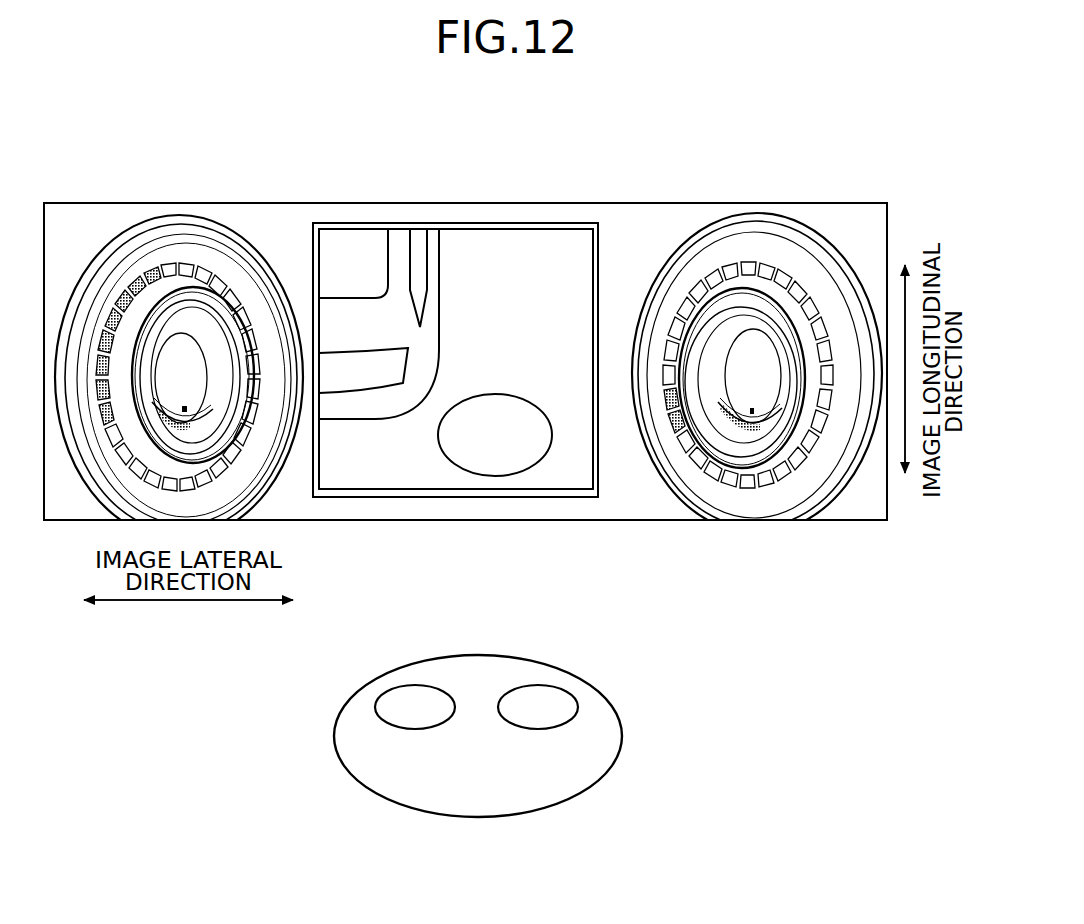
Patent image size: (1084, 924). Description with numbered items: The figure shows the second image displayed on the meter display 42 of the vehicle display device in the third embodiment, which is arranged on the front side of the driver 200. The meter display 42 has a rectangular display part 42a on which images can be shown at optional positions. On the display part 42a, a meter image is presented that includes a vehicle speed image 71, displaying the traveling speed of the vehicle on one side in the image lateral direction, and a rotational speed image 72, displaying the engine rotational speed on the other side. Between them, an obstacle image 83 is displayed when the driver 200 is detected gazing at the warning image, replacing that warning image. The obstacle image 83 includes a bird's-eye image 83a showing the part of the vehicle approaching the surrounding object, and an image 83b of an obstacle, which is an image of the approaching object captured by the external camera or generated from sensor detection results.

The meter display 42 is at (563, 203).
The display part 42a is at (285, 226).
The vehicle speed image 71 is at (240, 228).
The rotational speed image 72 is at (797, 222).
The obstacle image 83 is at (356, 498).
The bird's-eye image 83a is at (398, 412).
The image of an obstacle 83b is at (493, 455).
The driver 200 is at (480, 820).